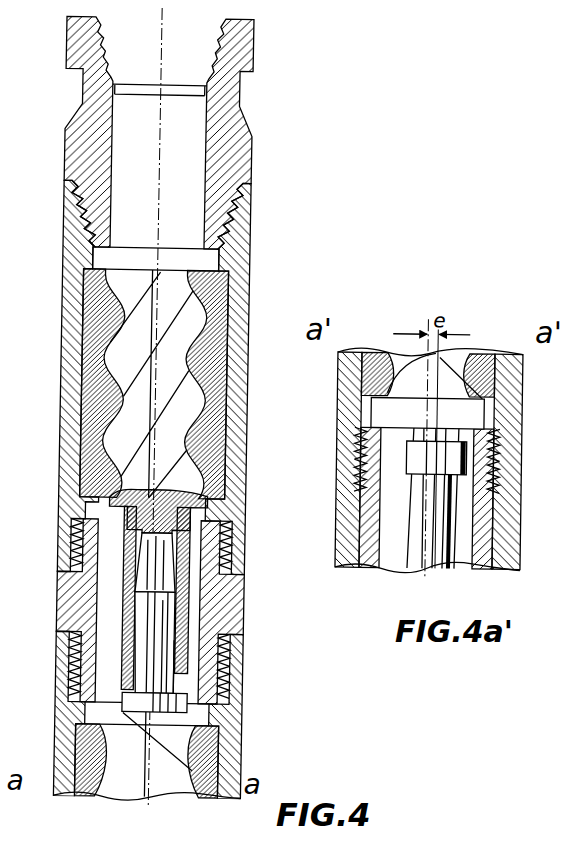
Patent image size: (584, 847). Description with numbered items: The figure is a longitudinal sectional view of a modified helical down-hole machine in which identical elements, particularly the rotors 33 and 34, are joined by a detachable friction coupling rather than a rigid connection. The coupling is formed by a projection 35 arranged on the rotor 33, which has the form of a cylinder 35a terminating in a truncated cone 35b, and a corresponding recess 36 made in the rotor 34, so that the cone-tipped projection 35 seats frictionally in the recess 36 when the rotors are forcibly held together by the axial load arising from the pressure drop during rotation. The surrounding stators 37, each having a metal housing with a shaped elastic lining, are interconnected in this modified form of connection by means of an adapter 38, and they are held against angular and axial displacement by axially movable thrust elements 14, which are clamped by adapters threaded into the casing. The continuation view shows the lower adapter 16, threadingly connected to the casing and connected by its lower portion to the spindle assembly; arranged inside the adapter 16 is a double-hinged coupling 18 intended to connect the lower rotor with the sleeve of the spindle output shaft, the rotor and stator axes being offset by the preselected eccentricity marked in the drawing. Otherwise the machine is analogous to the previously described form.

In FIG. 4, the thrust elements 14 is at (249, 139).
In FIG. 4, the rotor 34 is at (191, 282).
In FIG. 4, the stators 37 is at (251, 289).
In FIG. 4, the recess 36 is at (146, 502).
In FIG. 4, the projection 35 is at (181, 623).
In FIG. 4, the cylinder 35a is at (192, 652).
In FIG. 4, the truncated cone 35b is at (194, 572).
In FIG. 4, the adapter 38 is at (256, 678).
In FIG. 4, the rotor 33 is at (192, 786).
In FIG. 4a', the double-hinged coupling 18 is at (458, 458).
In FIG. 4a', the adapter 16 is at (507, 543).